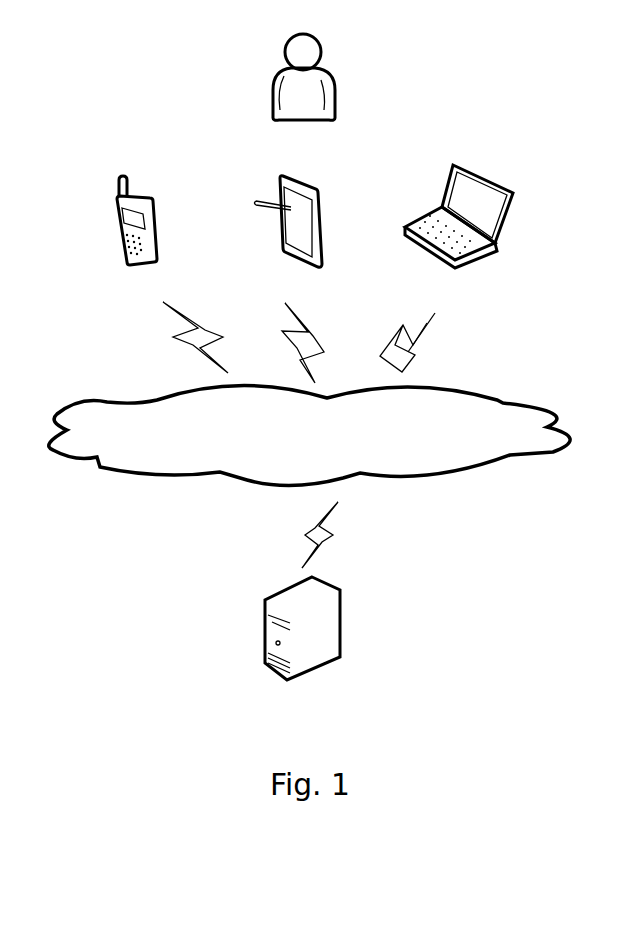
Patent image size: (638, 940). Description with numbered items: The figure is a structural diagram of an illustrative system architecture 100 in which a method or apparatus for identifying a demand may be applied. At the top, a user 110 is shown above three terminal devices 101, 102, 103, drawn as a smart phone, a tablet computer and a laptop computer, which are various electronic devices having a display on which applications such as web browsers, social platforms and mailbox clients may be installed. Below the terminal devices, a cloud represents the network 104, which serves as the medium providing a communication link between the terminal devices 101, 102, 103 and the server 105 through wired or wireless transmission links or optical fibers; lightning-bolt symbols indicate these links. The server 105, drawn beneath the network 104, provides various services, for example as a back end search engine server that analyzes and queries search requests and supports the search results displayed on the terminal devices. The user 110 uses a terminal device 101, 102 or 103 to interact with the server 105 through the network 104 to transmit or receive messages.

The system architecture 100 is at (486, 24).
The terminal device 101 is at (136, 236).
The terminal device 102 is at (289, 236).
The terminal device 103 is at (459, 231).
The network 104 is at (309, 435).
The server 105 is at (302, 647).
The user 110 is at (304, 92).